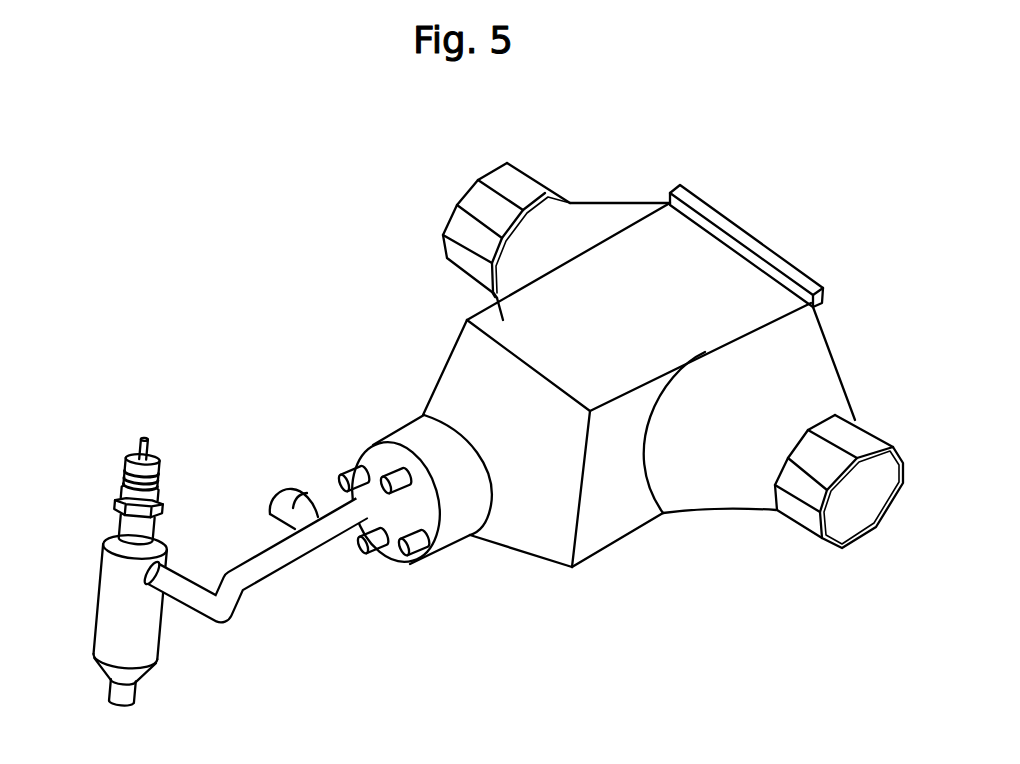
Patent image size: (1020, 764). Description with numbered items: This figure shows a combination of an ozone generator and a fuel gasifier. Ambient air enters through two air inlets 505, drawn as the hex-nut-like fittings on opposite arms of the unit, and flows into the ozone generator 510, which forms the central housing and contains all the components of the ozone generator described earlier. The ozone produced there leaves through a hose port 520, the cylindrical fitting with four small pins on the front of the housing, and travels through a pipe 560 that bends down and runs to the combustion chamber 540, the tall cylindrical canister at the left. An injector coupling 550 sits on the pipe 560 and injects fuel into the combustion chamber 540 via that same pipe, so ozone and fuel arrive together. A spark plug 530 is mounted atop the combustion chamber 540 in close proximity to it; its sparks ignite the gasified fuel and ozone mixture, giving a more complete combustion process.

The air inlets 505 is at (462, 193).
The ozone generator 510 is at (500, 318).
The hose port 520 is at (450, 552).
The spark plug 530 is at (126, 458).
The combustion chamber 540 is at (94, 611).
The injector coupling 550 is at (269, 497).
The pipe 560 is at (250, 552).